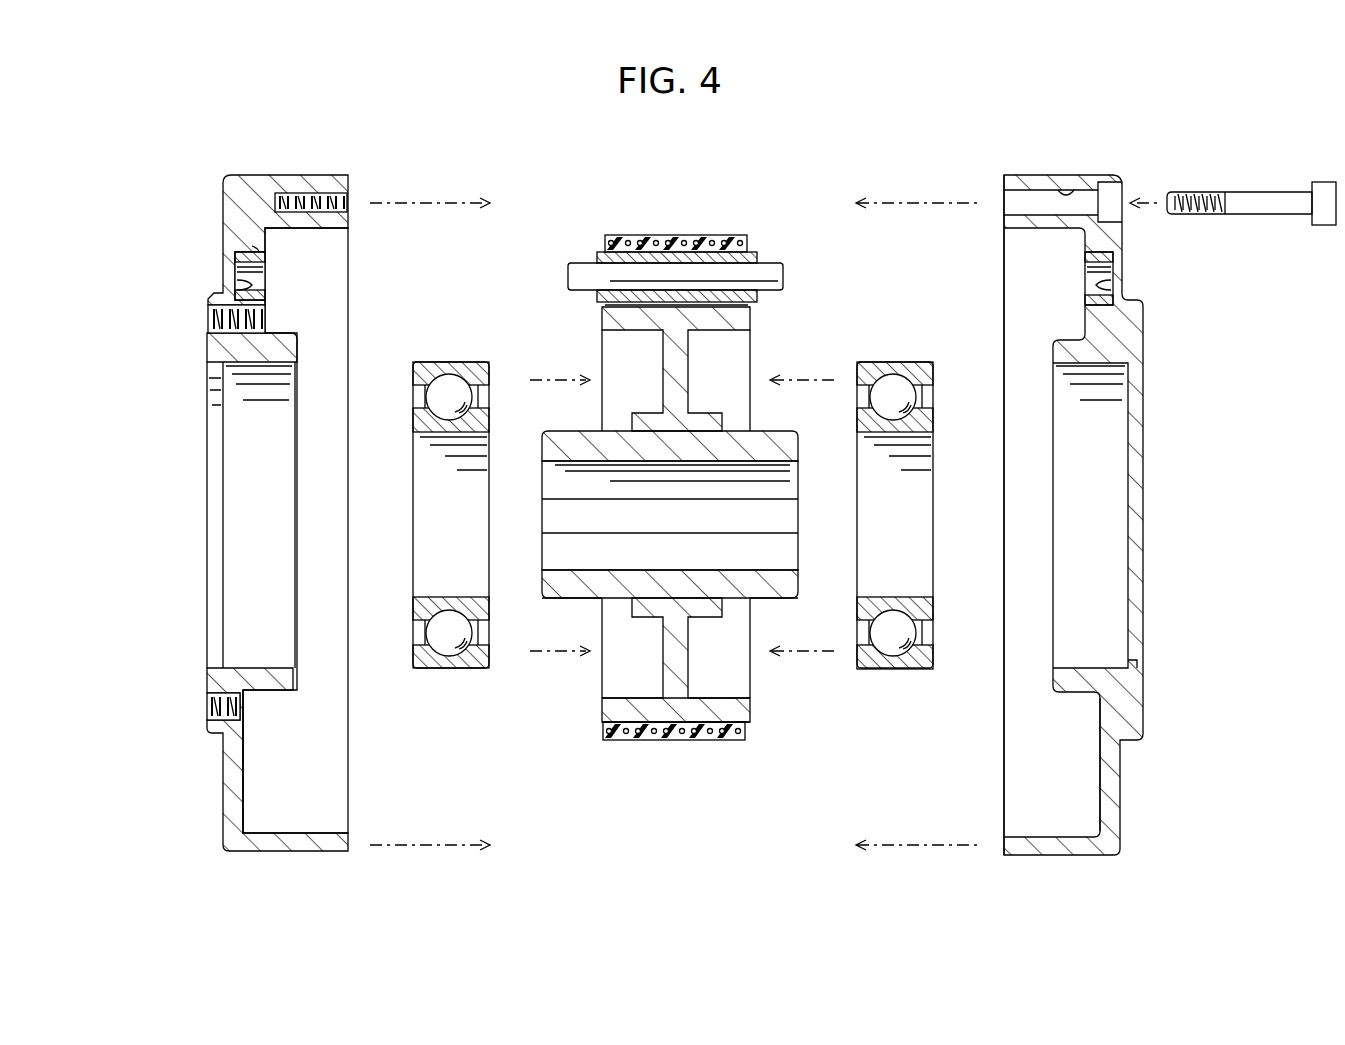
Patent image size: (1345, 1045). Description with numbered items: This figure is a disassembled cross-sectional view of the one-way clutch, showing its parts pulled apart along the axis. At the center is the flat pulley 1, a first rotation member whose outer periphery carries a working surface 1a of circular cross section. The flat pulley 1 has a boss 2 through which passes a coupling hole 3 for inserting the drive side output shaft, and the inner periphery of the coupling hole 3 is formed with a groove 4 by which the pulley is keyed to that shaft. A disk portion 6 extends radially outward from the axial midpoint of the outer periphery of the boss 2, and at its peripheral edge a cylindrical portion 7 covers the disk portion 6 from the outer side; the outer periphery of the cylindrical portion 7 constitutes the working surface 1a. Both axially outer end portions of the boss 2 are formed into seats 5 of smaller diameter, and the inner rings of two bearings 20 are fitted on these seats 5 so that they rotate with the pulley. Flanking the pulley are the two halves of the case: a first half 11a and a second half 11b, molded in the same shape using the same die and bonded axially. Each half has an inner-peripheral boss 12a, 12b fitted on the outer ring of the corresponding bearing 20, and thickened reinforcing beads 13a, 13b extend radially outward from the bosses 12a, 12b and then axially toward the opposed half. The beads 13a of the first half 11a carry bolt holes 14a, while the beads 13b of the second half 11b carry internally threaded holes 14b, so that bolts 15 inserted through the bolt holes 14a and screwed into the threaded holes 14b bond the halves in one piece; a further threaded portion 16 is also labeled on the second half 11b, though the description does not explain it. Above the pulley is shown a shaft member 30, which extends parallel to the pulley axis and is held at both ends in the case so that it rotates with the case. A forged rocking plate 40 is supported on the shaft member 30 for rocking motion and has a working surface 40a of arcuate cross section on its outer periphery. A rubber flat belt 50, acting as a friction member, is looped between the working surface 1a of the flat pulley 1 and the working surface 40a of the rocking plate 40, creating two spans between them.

The flat pulley 1 is at (671, 485).
The working surface 1a is at (690, 742).
The boss 2 is at (712, 412).
The coupling hole 3 is at (760, 553).
The groove 4 is at (582, 525).
The seat 5 is at (575, 600).
The disk portion 6 is at (665, 660).
The cylindrical portion 7 is at (600, 710).
The first half 11a is at (1089, 483).
The second half 11b is at (266, 479).
The boss 12a is at (1070, 700).
The boss 12b is at (272, 700).
The reinforcing bead 13a is at (1105, 283).
The reinforcing bead 13b is at (248, 274).
The bolt hole 14a is at (1072, 190).
The internally threaded hole 14b is at (328, 192).
The bolt 15 is at (1253, 192).
The threaded portion 16 is at (240, 330).
The bearing 20 is at (452, 670).
The shaft member 30 is at (582, 262).
The rocking plate 40 is at (686, 238).
The working surface 40a is at (722, 240).
The flat belt 50 is at (655, 742).